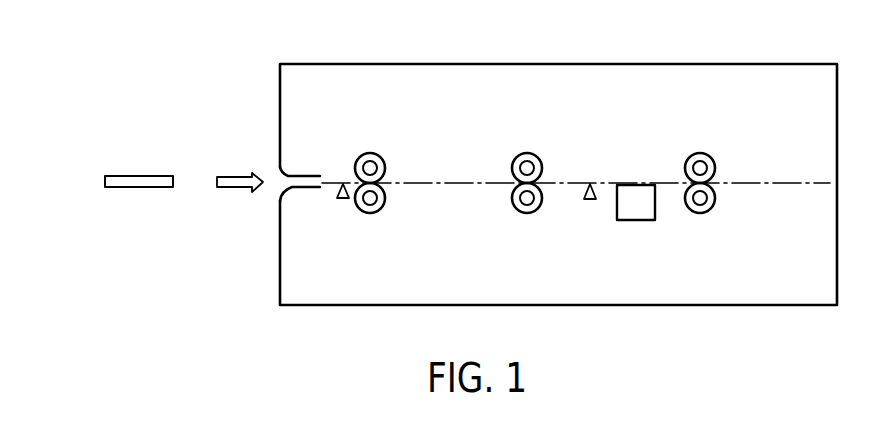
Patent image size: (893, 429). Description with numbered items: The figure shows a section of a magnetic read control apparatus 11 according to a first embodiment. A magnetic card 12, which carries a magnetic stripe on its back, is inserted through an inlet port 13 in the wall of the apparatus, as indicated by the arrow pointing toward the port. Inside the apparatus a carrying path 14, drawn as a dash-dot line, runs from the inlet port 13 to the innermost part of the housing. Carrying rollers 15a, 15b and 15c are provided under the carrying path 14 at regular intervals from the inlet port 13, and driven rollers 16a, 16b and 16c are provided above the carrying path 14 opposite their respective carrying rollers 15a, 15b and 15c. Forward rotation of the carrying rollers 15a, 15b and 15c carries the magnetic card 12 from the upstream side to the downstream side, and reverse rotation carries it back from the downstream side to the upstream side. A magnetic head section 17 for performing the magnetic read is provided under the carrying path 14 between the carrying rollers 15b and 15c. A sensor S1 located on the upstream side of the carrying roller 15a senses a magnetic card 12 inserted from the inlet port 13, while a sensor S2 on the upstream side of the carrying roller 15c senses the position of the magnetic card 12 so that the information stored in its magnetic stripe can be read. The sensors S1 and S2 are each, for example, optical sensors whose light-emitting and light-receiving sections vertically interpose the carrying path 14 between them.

The magnetic read control apparatus 11 is at (553, 63).
The magnetic card 12 is at (142, 176).
The inlet port 13 is at (277, 187).
The carrying path 14 is at (440, 180).
The carrying roller 15a is at (370, 214).
The carrying roller 15b is at (527, 214).
The carrying roller 15c is at (700, 214).
The driven roller 16a is at (370, 152).
The driven roller 16b is at (527, 152).
The driven roller 16c is at (700, 152).
The magnetic head section 17 is at (634, 222).
The sensor S1 is at (340, 200).
The sensor S2 is at (589, 201).